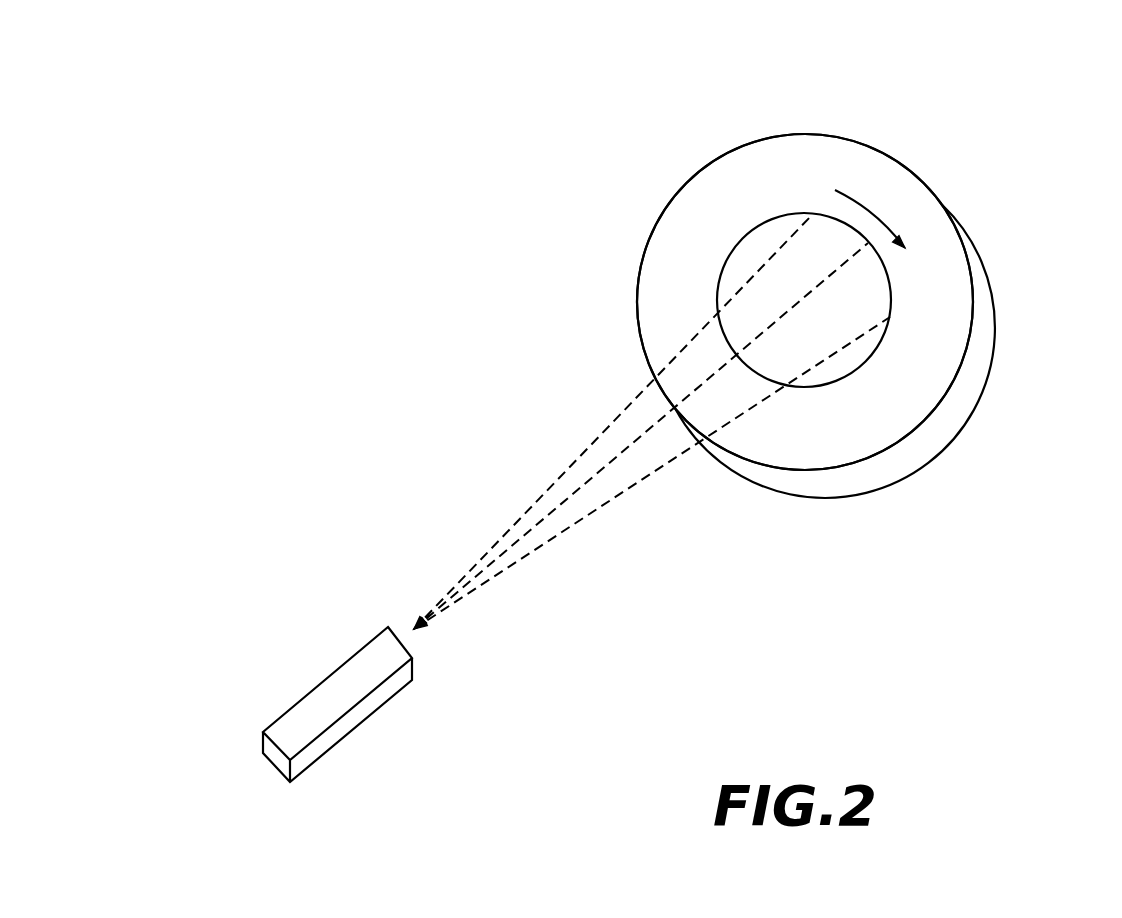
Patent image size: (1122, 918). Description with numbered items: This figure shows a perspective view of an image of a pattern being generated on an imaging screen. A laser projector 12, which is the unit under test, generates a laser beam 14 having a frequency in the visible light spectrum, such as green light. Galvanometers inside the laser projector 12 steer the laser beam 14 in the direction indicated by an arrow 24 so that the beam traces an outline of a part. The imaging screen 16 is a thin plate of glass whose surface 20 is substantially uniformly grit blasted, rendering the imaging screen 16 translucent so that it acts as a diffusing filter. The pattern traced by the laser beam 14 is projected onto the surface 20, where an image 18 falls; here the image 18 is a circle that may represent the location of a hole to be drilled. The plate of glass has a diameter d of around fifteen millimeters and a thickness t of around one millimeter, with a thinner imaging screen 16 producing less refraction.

The laser projector 12 is at (303, 628).
The laser beam 14 is at (492, 528).
The imaging screen 16 is at (660, 126).
The image 18 is at (918, 303).
The surface 20 is at (692, 207).
The arrow 24 is at (878, 215).
The thickness t is at (937, 185).
The diameter d is at (972, 518).